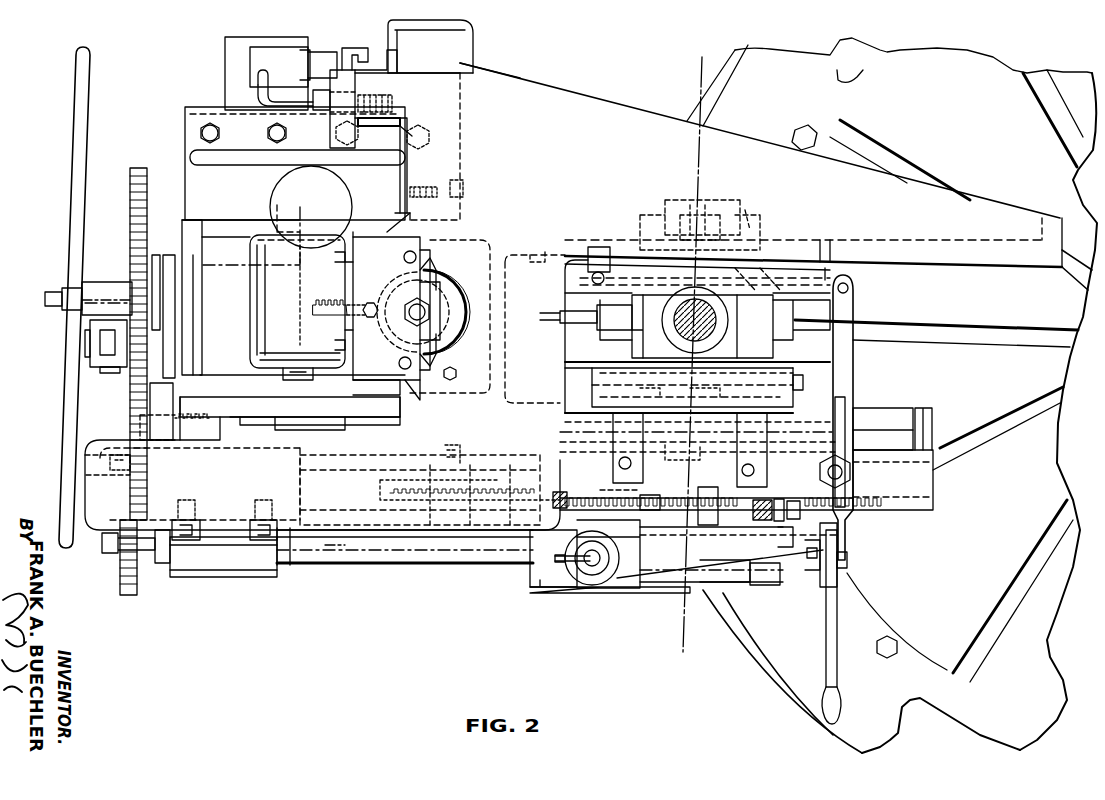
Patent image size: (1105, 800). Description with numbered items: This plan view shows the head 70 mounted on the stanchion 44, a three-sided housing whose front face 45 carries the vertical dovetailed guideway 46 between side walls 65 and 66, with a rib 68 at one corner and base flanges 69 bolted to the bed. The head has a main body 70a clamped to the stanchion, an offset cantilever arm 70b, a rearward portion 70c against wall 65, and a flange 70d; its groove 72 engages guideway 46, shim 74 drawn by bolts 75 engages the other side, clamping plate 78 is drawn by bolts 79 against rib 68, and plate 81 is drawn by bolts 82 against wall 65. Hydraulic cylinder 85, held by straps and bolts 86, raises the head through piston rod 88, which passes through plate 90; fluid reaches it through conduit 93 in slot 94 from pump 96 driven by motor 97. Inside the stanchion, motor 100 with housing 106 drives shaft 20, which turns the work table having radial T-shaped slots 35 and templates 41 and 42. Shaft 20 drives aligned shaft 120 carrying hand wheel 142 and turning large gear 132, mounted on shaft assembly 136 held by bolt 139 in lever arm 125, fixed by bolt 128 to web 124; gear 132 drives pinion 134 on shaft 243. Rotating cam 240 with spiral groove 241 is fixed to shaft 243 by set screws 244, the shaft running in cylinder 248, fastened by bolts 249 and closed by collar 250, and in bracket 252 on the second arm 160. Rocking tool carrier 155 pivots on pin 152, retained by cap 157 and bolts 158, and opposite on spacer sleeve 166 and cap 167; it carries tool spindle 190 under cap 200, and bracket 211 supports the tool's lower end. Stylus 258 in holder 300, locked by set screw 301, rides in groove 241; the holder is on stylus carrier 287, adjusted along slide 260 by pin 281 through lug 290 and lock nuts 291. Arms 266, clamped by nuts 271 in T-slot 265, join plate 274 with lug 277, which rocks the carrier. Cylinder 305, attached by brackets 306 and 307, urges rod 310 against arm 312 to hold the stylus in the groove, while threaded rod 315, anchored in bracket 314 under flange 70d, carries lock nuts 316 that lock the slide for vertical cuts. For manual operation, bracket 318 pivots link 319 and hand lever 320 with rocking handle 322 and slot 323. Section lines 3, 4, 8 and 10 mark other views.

The section line 3- 3 is at (702, 57).
The section line 4- 4 is at (547, 403).
The section line 8- 8 is at (147, 563).
The section line 10- 10 is at (111, 290).
The shaft 20 is at (575, 323).
The radial T-shaped slots 35 is at (960, 190).
The upper template 41 is at (765, 648).
The lower template 42 is at (777, 684).
The stanchion 44 is at (320, 408).
The front face 45 is at (421, 144).
The vertical dovetailed guideway 46 is at (410, 216).
The side wall 65 is at (245, 400).
The side wall 66 is at (207, 140).
The vertical rib 68 is at (397, 127).
The lower flanges 69 is at (280, 140).
The head 70 is at (562, 92).
The main body portion 70a is at (563, 260).
The cantilever arm 70b is at (865, 185).
The rearwardly extending portion 70c is at (310, 470).
The flange 70d is at (95, 490).
The dove-tailed groove 72 is at (405, 213).
The shim 74 is at (430, 185).
The bolts 75 is at (465, 190).
The clamping plate 78 is at (337, 80).
The bolts 79 is at (323, 102).
The vertical plate 81 is at (160, 402).
The bolts 82 is at (150, 426).
The hydraulic cylinder 85 is at (455, 300).
The straps and bolts 86 is at (430, 272).
The piston rod 88 is at (430, 312).
The plate 90 is at (365, 380).
The conduit 93 is at (340, 305).
The slot 94 is at (392, 306).
The pump 96 is at (262, 42).
The motor 97 is at (455, 45).
The motor 100 is at (270, 318).
The housing 106 is at (318, 192).
The shaft 120 is at (48, 300).
The web 124 is at (190, 290).
The lever arm 125 is at (170, 264).
The bolt 128 is at (152, 267).
The large gear 132 is at (138, 166).
The pinion 134 is at (128, 593).
The shaft assembly 136 is at (103, 380).
The bolt 139 is at (88, 345).
The hand wheel 142 is at (67, 447).
The pin 152 is at (683, 230).
The rocking tool carrier 155 is at (746, 323).
The cap 157 is at (742, 215).
The bolts 158 is at (705, 218).
The second arm 160 is at (890, 417).
The threaded spacer sleeve 166 is at (660, 400).
The cap 167 is at (690, 443).
The tool spindle 190 is at (747, 277).
The cap 200 is at (780, 264).
The arm 211 is at (560, 317).
The rotating cam 240 is at (573, 589).
The spiral groove 241 is at (610, 585).
The shaft 243 is at (415, 565).
The set screws 244 is at (550, 590).
The cylinder 248 is at (205, 578).
The bolts 249 is at (260, 498).
The threaded collar 250 is at (157, 567).
The bracket 252 is at (773, 587).
The stylus 258 is at (619, 548).
The slide 260 is at (935, 505).
The T-shaped slot 265 is at (935, 455).
The arms 266 is at (615, 432).
The nut 271 is at (618, 465).
The plate 274 is at (773, 397).
The lug 277 is at (805, 377).
The threaded pin 281 is at (845, 568).
The stylus carrier slide block 287 is at (723, 587).
The lug 290 is at (837, 563).
The lock nuts 291 is at (830, 553).
The stylus holder 300 is at (615, 580).
The set screw 301 is at (555, 559).
The collar 305 is at (345, 565).
The bracket 306 is at (110, 460).
The bracket 307 is at (455, 452).
The rod 310 is at (645, 492).
The vertical arm 312 is at (760, 498).
The bracket 314 is at (447, 503).
The rod 315 is at (557, 492).
The lock nuts 316 is at (567, 515).
The bracket 318 is at (598, 260).
The link 319 is at (830, 258).
The hand lever 320 is at (845, 327).
The rocking handle 322 is at (838, 665).
The slot 323 is at (845, 400).